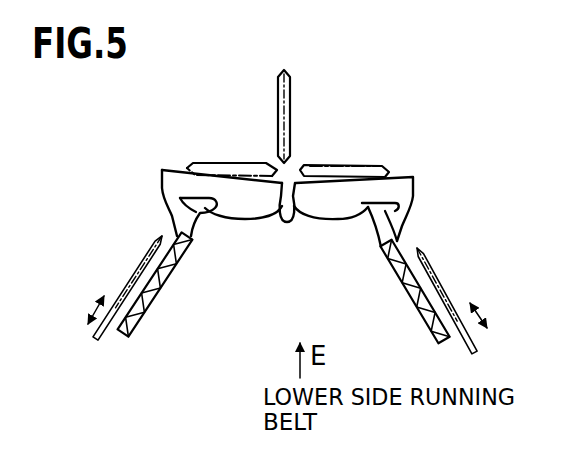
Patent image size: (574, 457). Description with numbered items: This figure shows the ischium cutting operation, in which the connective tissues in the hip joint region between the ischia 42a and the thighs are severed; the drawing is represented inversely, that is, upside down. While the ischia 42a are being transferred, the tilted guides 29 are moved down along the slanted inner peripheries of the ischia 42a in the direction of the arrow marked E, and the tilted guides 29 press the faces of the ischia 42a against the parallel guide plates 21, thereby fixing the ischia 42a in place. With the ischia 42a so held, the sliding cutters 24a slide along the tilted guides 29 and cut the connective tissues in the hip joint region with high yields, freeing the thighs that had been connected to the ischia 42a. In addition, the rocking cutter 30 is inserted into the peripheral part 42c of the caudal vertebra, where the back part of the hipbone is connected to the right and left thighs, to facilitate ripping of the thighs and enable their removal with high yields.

The parallel guide plate 21 is at (367, 165).
The rocking cutter 30 is at (290, 92).
The sliding cutter 24a is at (126, 285).
The ischium 42a is at (190, 206).
The peripheral part of the caudal vertebra 42c is at (287, 222).
The tilted guide 29 is at (372, 298).